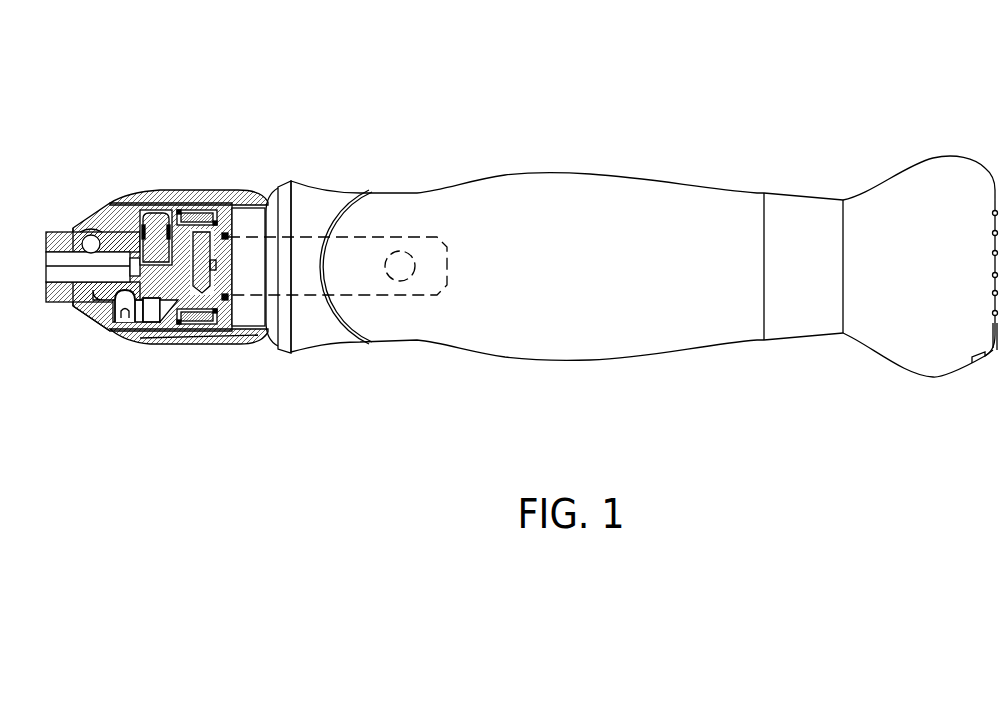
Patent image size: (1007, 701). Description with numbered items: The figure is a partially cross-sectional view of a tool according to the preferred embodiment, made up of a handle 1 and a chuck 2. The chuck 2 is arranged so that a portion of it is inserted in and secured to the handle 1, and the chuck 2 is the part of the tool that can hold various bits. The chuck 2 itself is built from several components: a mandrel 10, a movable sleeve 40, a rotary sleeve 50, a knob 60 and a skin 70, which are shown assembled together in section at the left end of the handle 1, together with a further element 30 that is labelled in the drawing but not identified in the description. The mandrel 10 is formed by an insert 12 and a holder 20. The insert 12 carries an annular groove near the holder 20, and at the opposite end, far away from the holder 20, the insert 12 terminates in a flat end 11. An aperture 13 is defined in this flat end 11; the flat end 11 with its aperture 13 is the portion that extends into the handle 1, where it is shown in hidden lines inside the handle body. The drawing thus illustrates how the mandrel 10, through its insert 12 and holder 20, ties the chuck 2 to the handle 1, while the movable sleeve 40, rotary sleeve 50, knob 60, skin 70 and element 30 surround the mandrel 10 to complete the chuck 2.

The handle 1 is at (980, 112).
The chuck 2 is at (265, 103).
The mandrel 10 is at (312, 440).
The flat end 11 is at (344, 273).
The insert 12 is at (248, 332).
The aperture 13 is at (407, 283).
The holder 20 is at (175, 317).
The main body 30 is at (163, 175).
The movable sleeve 40 is at (107, 220).
The rotary sleeve 50 is at (213, 190).
The knob 60 is at (143, 207).
The skin 70 is at (188, 192).